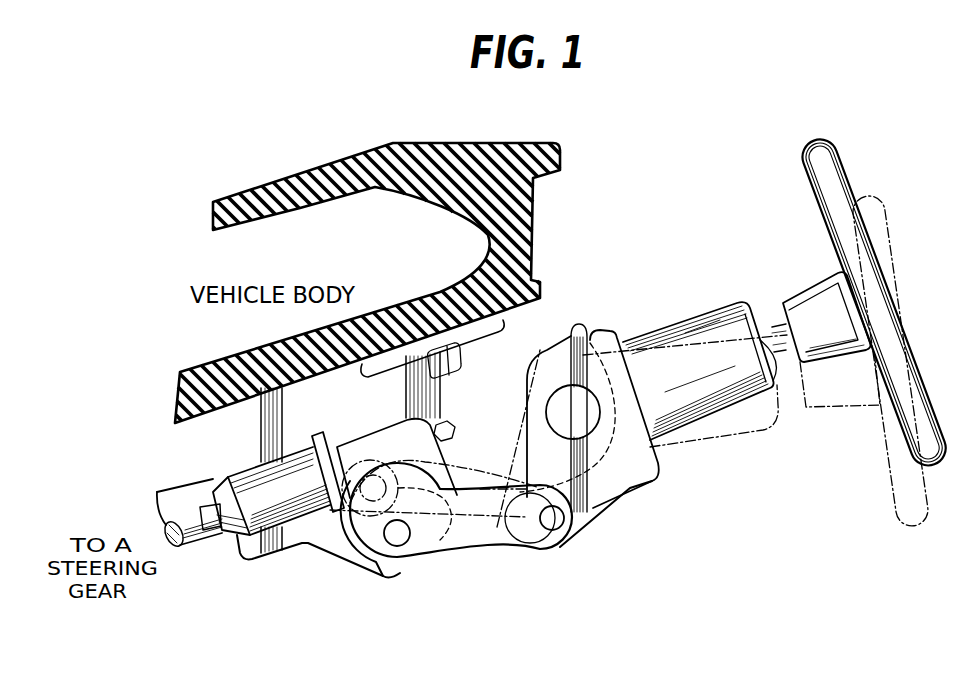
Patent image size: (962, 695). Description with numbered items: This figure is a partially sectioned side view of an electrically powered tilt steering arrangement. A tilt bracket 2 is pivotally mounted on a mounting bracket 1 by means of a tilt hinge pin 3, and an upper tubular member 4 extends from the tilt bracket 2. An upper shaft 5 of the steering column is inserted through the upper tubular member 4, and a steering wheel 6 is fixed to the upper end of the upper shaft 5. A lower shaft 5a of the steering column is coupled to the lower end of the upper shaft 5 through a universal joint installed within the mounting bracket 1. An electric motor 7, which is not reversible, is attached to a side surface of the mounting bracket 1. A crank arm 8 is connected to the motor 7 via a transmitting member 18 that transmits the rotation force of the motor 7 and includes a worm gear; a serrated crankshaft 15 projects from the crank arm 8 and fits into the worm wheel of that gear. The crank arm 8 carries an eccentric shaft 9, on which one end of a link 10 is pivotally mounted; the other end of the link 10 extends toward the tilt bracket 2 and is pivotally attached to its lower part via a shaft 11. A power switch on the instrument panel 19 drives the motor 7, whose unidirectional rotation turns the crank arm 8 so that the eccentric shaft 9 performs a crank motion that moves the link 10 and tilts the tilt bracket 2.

The mounting bracket 1 is at (543, 335).
The tilt bracket 2 is at (630, 464).
The tilt hinge pin 3 is at (582, 425).
The upper tubular member 4 is at (658, 350).
The upper shaft 5 is at (782, 358).
The lower shaft 5a is at (193, 530).
The steering wheel 6 is at (815, 162).
The electric motor 7 is at (289, 512).
The crank arm 8 is at (427, 497).
The eccentric shaft 9 is at (395, 540).
The link 10 is at (503, 533).
The shaft 11 is at (560, 527).
The crankshaft 15 is at (407, 500).
The transmitting member 18 is at (362, 425).
The instrument panel 19 is at (560, 155).